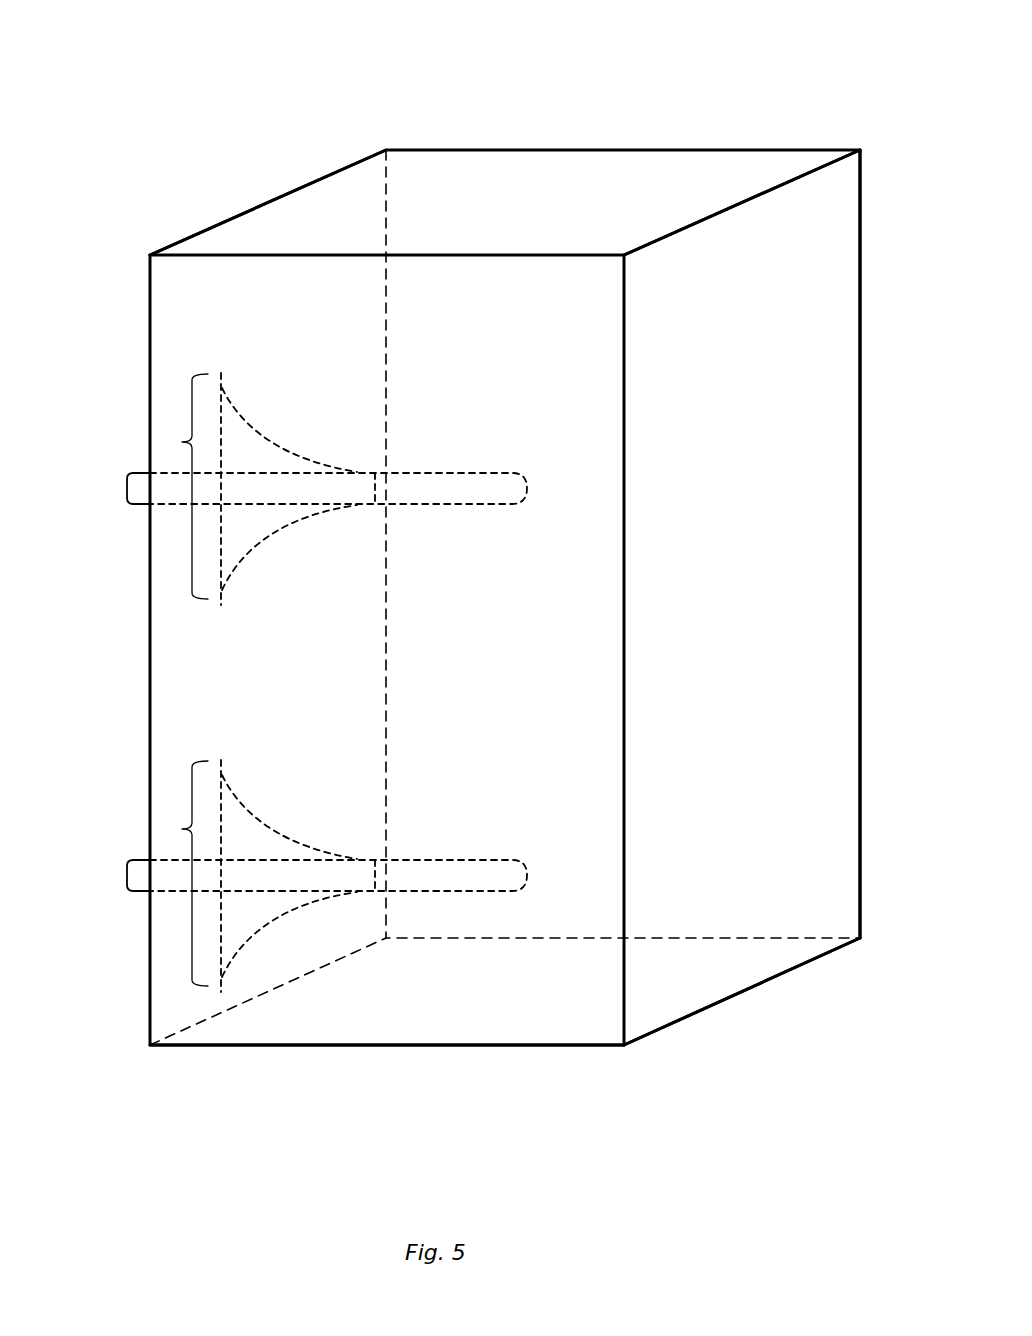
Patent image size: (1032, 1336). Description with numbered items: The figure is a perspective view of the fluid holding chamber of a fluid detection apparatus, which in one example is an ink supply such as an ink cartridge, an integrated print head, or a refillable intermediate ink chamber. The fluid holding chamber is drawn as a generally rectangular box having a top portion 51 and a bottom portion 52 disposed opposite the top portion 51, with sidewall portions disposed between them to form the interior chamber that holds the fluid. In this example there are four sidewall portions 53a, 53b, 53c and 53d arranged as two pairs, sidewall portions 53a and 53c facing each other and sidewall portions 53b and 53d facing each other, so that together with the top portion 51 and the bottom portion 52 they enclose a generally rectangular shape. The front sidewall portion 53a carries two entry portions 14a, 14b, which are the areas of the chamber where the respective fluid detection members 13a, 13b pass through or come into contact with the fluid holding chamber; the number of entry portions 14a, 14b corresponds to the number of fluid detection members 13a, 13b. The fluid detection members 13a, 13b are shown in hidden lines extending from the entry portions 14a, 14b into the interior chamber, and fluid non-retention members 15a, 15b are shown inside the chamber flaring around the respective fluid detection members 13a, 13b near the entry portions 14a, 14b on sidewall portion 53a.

The top portion 51 is at (522, 198).
The bottom portion 52 is at (560, 1014).
The sidewall portion 53a is at (200, 212).
The sidewall portion 53b is at (758, 128).
The sidewall portion 53c is at (768, 898).
The sidewall portion 53d is at (476, 1078).
The fluid detection member 13a is at (532, 480).
The fluid detection member 13b is at (532, 867).
The entry portion 14a is at (182, 442).
The entry portion 14b is at (182, 829).
The fluid non-retention member 15a is at (253, 457).
The fluid non-retention member 15b is at (250, 828).